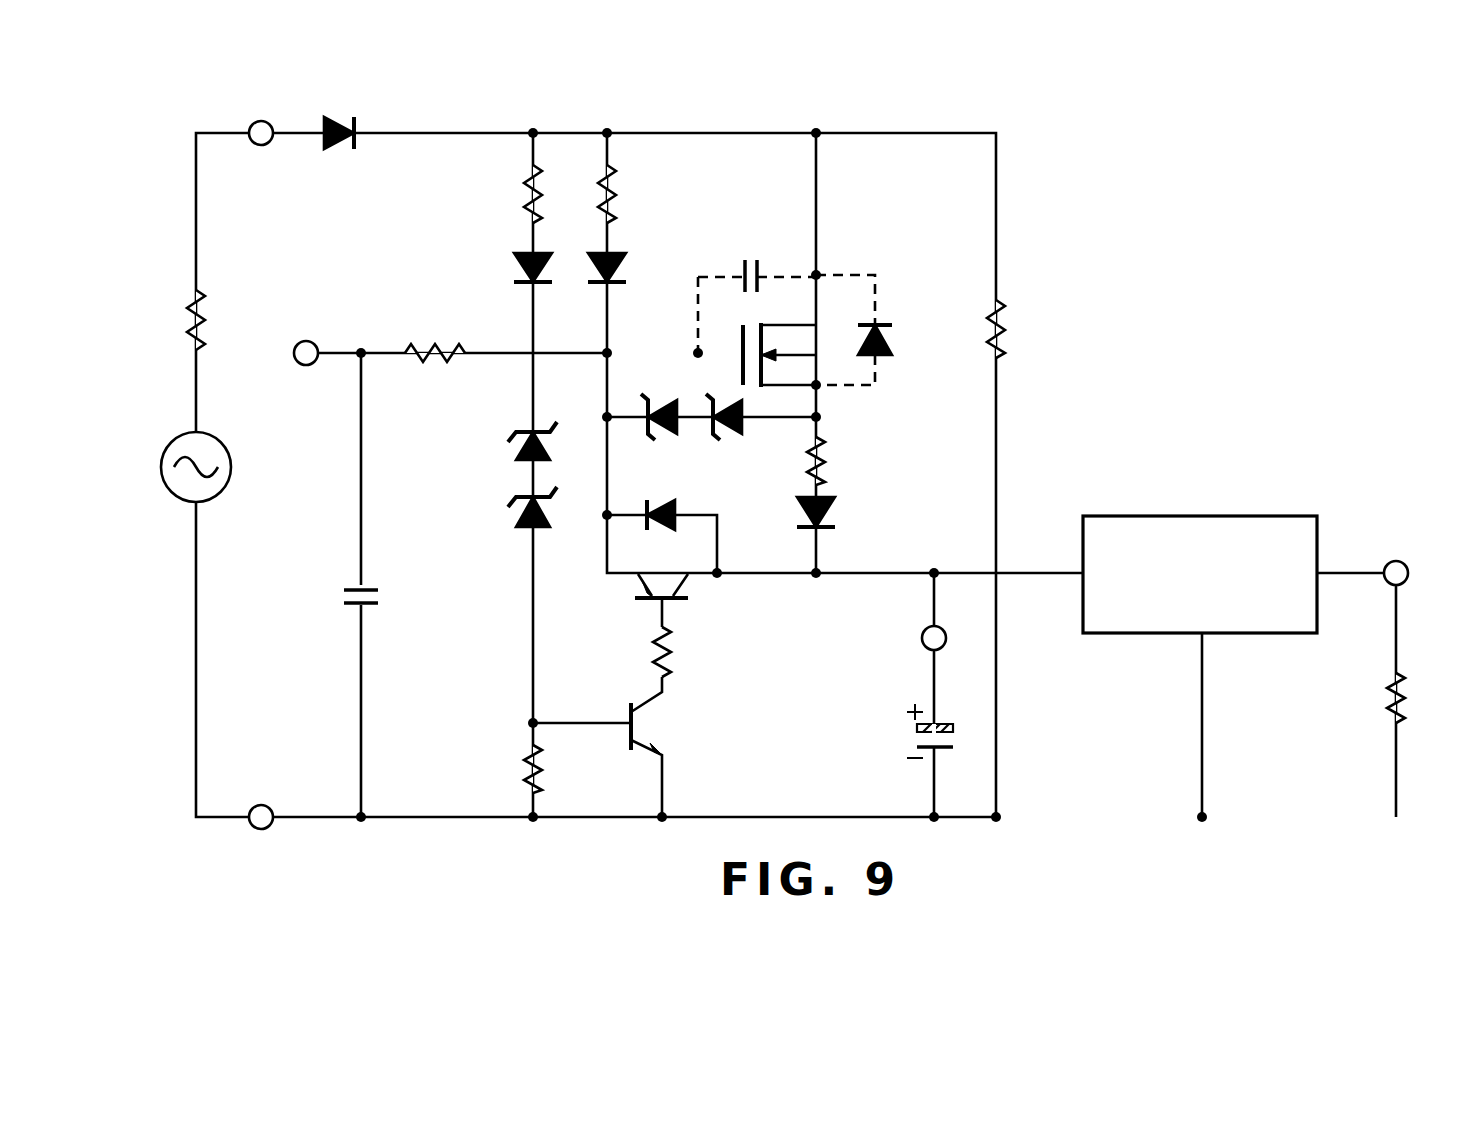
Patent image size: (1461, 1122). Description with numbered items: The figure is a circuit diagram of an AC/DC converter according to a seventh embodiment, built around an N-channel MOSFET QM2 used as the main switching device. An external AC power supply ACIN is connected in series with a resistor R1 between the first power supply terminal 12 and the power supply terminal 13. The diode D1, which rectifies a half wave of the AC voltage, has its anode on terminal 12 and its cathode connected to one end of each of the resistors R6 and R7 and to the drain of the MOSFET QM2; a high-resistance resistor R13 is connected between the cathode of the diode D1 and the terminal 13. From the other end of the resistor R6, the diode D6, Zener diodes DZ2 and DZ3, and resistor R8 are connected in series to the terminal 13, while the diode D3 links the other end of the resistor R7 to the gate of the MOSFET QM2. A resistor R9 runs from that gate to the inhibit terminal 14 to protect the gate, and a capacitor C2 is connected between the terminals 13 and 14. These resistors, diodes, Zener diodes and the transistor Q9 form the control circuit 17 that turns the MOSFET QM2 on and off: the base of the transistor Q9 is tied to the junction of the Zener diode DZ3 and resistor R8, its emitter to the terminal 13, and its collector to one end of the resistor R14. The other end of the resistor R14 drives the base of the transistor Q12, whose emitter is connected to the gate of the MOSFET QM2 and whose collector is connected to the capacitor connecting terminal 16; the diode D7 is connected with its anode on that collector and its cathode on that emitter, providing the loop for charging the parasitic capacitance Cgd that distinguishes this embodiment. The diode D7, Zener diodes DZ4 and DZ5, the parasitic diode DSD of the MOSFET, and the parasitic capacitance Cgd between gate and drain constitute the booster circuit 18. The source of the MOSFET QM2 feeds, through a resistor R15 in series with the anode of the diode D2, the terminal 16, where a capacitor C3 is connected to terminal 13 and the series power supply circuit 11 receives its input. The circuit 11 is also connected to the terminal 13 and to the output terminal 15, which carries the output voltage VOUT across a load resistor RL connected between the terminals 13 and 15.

The series power supply circuit 11 is at (1278, 516).
The first power supply terminal 12 is at (261, 121).
The power supply terminal 13 is at (268, 830).
The inhibit terminal 14 is at (306, 340).
The output terminal 15 is at (1398, 560).
The capacitor connecting terminal 16 is at (922, 639).
The control circuit 17 is at (583, 122).
The booster circuit 18 is at (764, 240).
The diode D1 is at (340, 121).
The diode D2 is at (828, 518).
The diode D3 is at (614, 268).
The diode D6 is at (524, 256).
The diode D7 is at (662, 525).
The Zener diode DZ2 is at (512, 454).
The Zener diode DZ3 is at (520, 516).
The Zener diode DZ4 is at (663, 440).
The Zener diode DZ5 is at (730, 440).
The parasitic diode DSD is at (882, 341).
The parasitic capacitance Cgd is at (754, 251).
The MOSFET QM2 is at (827, 365).
The transistor Q9 is at (656, 728).
The transistor Q12 is at (694, 584).
The resistor R1 is at (194, 320).
The resistor R6 is at (529, 184).
The resistor R7 is at (612, 197).
The resistor R8 is at (538, 770).
The resistor R9 is at (444, 350).
The resistor R13 is at (1010, 322).
The resistor R14 is at (674, 657).
The resistor R15 is at (831, 458).
The resistor RL is at (1406, 706).
The capacitor C2 is at (344, 601).
The capacitor C3 is at (910, 733).
The AC power supply ACIN is at (160, 465).
The output voltage VOUT is at (1440, 573).